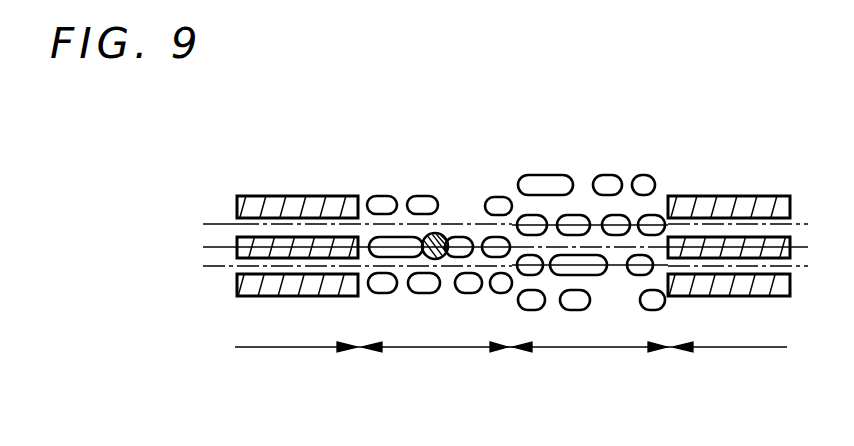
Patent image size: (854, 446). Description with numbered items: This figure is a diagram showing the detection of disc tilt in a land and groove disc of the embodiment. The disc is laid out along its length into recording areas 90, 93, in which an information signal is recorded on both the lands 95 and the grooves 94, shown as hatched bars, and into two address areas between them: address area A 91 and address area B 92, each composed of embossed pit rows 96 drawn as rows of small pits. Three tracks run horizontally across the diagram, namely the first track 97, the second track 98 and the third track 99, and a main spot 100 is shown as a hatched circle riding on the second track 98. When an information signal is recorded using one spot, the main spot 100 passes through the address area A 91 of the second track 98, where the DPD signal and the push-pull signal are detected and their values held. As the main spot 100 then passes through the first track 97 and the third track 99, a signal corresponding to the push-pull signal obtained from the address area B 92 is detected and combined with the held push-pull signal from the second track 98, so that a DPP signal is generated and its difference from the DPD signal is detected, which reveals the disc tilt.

The recording area 90 is at (262, 348).
The address area A 91 is at (412, 348).
The address area B 92 is at (567, 348).
The recording area 93 is at (730, 348).
The groove 94 is at (260, 197).
The land 95 is at (313, 208).
The embossed pit rows 96 is at (617, 158).
The track (1) 97 is at (433, 219).
The track (2) 98 is at (433, 245).
The track (3) 99 is at (433, 266).
The main spot 100 is at (445, 232).